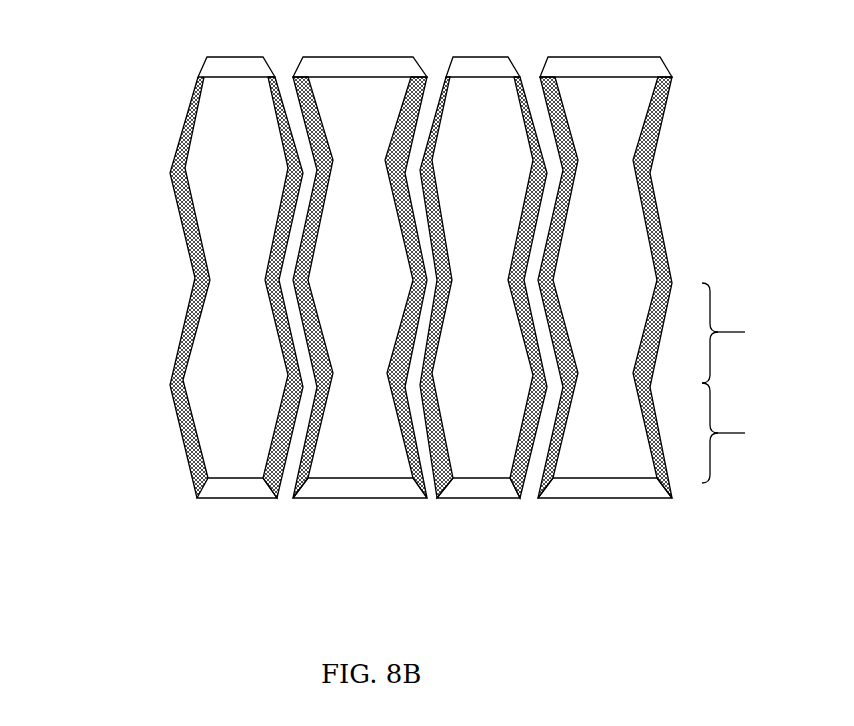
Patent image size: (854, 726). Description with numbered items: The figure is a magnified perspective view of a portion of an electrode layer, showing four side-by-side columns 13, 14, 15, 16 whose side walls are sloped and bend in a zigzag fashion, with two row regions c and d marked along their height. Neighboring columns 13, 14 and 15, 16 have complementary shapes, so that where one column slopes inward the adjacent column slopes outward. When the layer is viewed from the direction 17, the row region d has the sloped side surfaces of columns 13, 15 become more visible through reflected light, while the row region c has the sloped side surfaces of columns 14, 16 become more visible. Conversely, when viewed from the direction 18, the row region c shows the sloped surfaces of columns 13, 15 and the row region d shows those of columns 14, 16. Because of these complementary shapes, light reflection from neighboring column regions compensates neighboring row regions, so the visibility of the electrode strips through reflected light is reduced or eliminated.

The column 13 is at (163, 327).
The column 14 is at (358, 520).
The column 15 is at (483, 520).
The column 16 is at (602, 517).
The viewing direction 17 is at (138, 458).
The viewing direction 18 is at (145, 317).
The row region c is at (736, 333).
The row region d is at (737, 433).